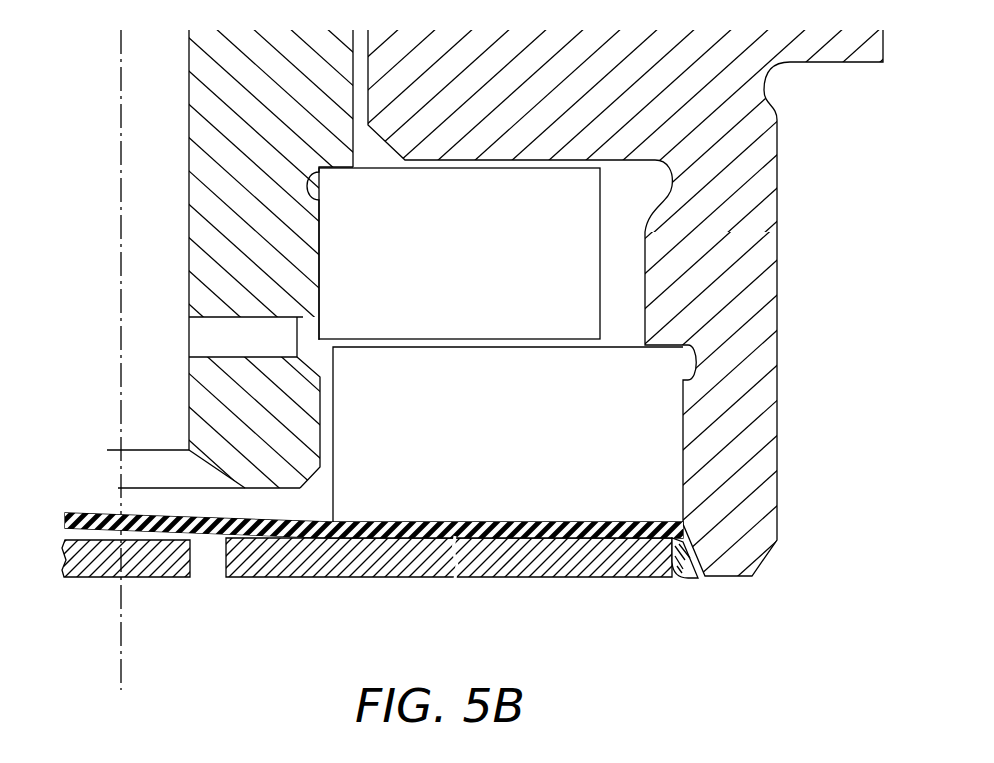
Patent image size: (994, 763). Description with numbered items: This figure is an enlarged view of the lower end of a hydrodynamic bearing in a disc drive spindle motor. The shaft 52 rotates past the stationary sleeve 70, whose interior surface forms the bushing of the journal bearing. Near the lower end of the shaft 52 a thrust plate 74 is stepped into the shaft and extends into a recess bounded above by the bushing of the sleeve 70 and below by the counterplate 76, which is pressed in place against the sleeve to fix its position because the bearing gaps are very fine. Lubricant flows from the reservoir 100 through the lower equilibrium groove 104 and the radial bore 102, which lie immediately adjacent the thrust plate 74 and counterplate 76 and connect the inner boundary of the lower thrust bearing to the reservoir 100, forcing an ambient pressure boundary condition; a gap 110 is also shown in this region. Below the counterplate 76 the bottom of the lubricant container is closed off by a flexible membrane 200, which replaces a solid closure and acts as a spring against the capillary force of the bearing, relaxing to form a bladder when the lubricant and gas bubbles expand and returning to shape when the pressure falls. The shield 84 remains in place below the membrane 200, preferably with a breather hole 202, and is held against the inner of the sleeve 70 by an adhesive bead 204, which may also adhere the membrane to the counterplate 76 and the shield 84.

The shaft 52 is at (284, 129).
The sleeve 70 is at (646, 101).
The thrust plate 74 is at (478, 262).
The counterplate 76 is at (526, 460).
The shield 84 is at (497, 381).
The reservoir 100 is at (181, 398).
The radial bore 102 is at (270, 354).
The lower equilibrium groove 104 is at (272, 297).
The clearance 110 is at (376, 397).
The flexible membrane 200 is at (497, 381).
The breather hole 202 is at (236, 604).
The adhesive bead 204 is at (720, 581).